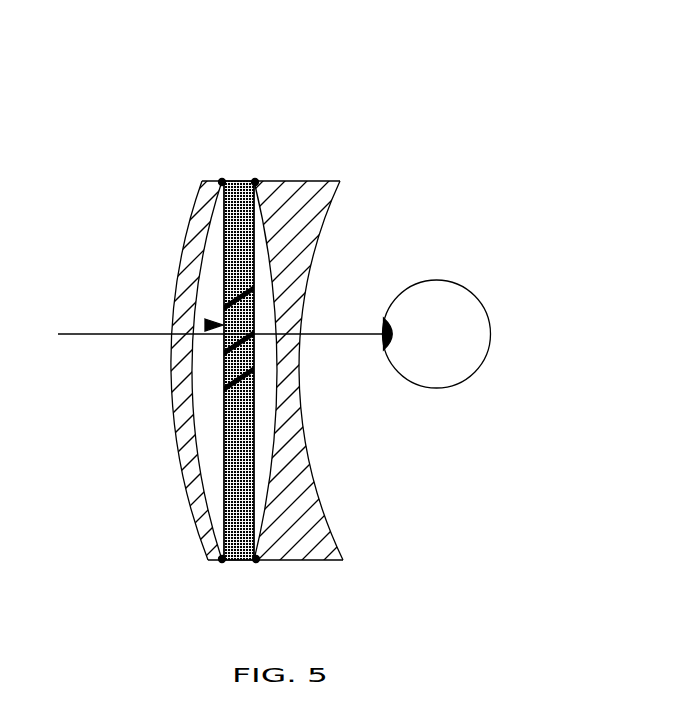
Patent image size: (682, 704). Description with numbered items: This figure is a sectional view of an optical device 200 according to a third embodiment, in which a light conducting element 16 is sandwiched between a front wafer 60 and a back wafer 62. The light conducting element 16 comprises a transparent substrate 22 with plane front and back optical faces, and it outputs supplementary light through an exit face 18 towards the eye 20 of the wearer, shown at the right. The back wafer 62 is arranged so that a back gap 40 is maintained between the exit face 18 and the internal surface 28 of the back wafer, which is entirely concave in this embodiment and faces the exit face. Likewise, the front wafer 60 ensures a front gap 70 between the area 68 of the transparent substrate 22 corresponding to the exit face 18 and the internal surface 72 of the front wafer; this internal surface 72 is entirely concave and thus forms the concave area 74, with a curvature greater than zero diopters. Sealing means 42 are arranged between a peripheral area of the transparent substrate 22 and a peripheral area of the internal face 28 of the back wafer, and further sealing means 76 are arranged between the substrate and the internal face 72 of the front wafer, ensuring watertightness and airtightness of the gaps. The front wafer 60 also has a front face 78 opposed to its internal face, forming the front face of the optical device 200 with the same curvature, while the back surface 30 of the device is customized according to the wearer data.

The optical device 200 is at (363, 122).
The sealing means 76 is at (222, 182).
The sealing means 42 is at (255, 182).
The back wafer 62 is at (318, 202).
The concave area 74 is at (202, 253).
The exit face 18 is at (257, 304).
The light conducting element 16 is at (206, 325).
The front face 78 is at (170, 347).
The area corresponding to the exit face 68 is at (222, 360).
The front gap 70 is at (219, 408).
The back gap 40 is at (267, 382).
The internal surface of the back wafer 28 is at (275, 446).
The eye 20 is at (470, 357).
The internal surface of the front wafer 72 is at (193, 478).
The front wafer 60 is at (197, 352).
The transparent substrate 22 is at (233, 375).
The back surface 30 is at (311, 352).